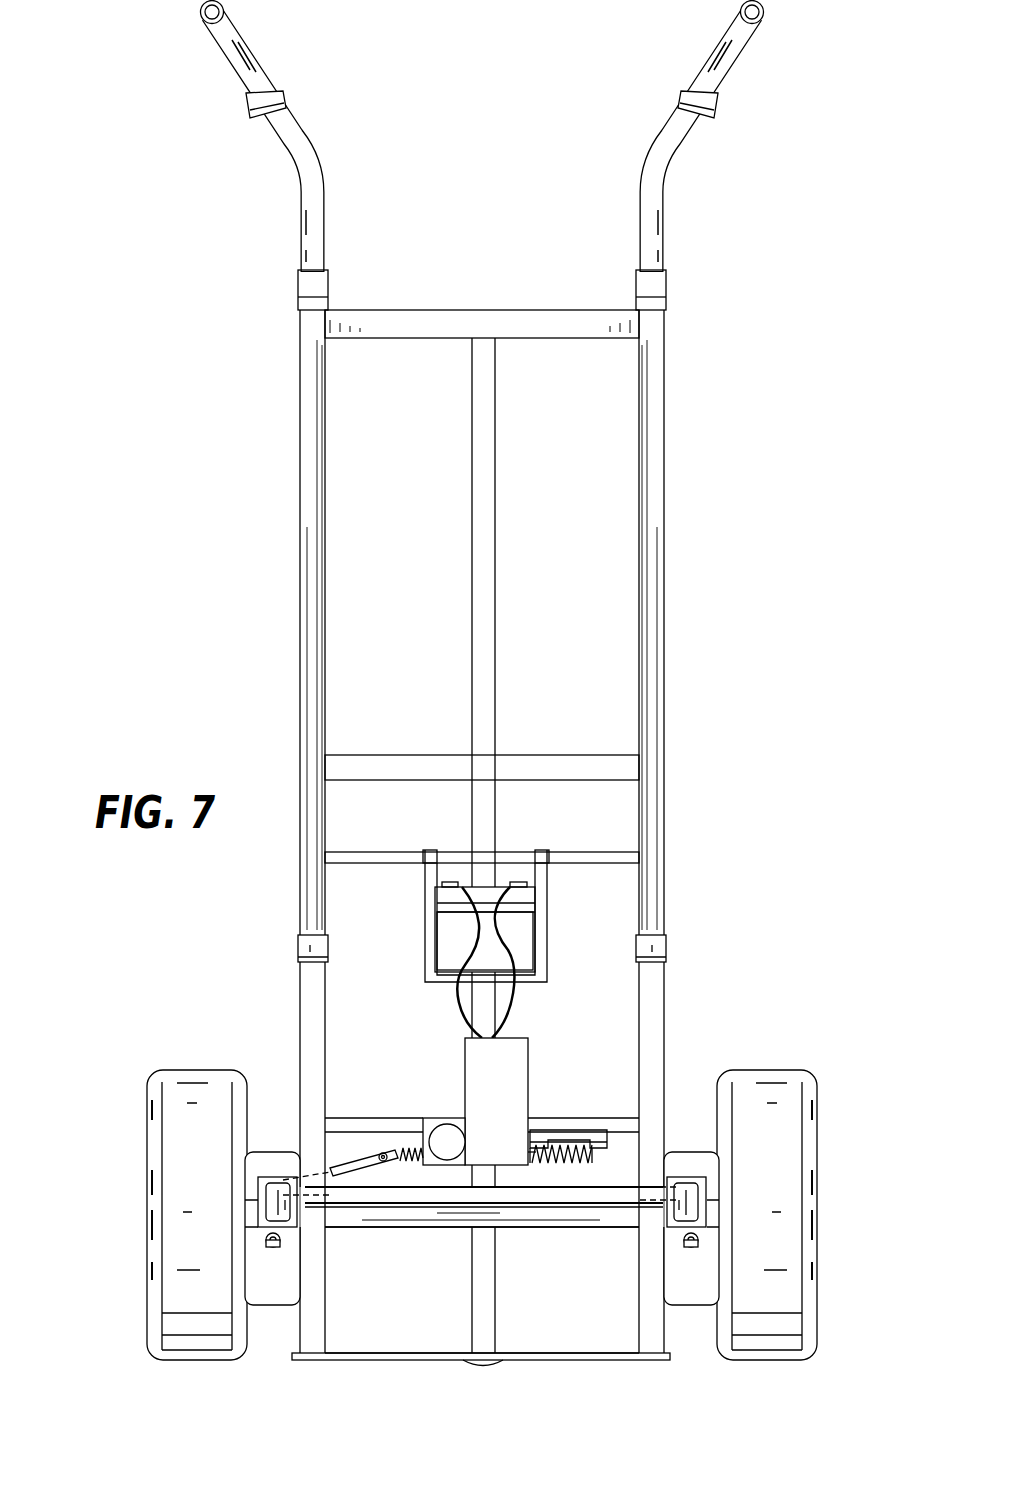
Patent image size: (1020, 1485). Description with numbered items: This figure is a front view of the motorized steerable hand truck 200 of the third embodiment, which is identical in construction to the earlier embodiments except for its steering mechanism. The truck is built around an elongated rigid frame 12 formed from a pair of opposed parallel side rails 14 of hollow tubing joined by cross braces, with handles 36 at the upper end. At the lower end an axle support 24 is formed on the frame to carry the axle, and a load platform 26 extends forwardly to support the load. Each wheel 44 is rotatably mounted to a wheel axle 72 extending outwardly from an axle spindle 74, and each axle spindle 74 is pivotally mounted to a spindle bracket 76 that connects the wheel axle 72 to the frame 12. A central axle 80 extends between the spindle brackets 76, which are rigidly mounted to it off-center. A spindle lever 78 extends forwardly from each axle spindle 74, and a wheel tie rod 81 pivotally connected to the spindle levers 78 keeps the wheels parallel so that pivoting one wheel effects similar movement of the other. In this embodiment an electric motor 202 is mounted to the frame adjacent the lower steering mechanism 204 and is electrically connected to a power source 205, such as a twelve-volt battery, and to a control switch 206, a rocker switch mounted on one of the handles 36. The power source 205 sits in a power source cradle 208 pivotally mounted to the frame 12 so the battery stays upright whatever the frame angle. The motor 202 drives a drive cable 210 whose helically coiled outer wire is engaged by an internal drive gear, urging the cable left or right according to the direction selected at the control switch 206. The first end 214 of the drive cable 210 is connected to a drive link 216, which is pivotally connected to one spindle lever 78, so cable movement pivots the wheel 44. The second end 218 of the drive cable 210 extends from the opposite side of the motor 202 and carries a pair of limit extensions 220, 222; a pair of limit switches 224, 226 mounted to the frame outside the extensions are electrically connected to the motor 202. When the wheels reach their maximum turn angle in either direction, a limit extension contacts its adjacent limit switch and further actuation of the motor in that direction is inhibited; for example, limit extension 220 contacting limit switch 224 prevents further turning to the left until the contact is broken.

The frame 12 is at (702, 936).
The side rails 14 is at (300, 638).
The axle support 24 is at (648, 1040).
The load platform 26 is at (430, 1343).
The handles 36 is at (298, 160).
The wheels 44 is at (150, 1077).
The wheel axle 72 is at (258, 1213).
The axle spindle 74 is at (258, 1222).
The spindle bracket 76 is at (290, 1250).
The spindle lever 78 is at (282, 1178).
The central axle 80 is at (455, 1220).
The wheel tie rod 81 is at (420, 1195).
The motorized steerable hand truck 200 is at (772, 946).
The electric motor 202 is at (540, 1063).
The lower steering mechanism 204 is at (397, 1099).
The power source 205 is at (455, 963).
The control switch 206 is at (238, 101).
The power source cradle 208 is at (572, 940).
The drive cable 210 is at (412, 1150).
The first end 214 is at (370, 1153).
The drive link 216 is at (345, 1160).
The second end 218 is at (612, 1182).
The limit extension 220 is at (562, 1140).
The limit extension 222 is at (578, 1165).
The limit switch 224 is at (535, 1165).
The limit switch 226 is at (607, 1140).